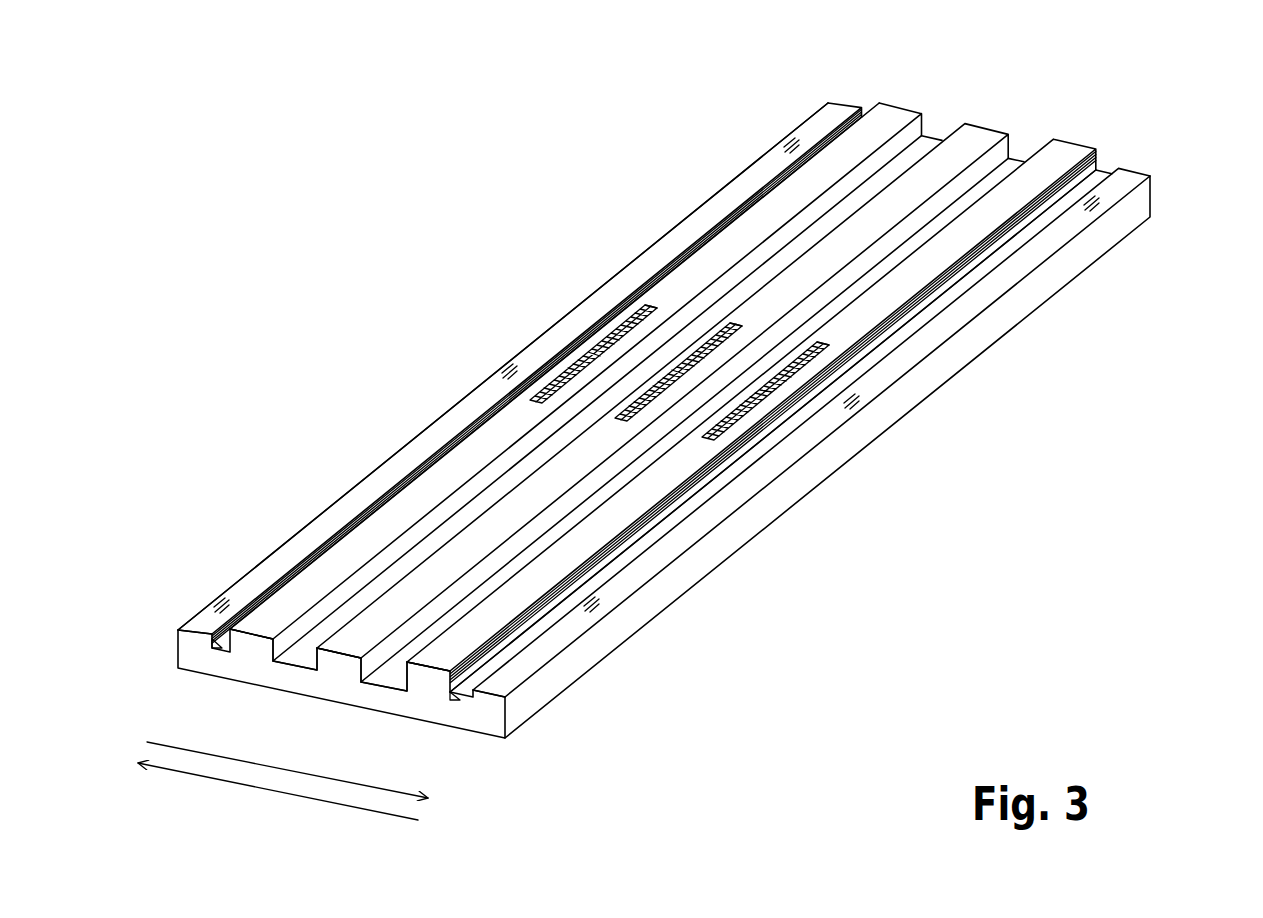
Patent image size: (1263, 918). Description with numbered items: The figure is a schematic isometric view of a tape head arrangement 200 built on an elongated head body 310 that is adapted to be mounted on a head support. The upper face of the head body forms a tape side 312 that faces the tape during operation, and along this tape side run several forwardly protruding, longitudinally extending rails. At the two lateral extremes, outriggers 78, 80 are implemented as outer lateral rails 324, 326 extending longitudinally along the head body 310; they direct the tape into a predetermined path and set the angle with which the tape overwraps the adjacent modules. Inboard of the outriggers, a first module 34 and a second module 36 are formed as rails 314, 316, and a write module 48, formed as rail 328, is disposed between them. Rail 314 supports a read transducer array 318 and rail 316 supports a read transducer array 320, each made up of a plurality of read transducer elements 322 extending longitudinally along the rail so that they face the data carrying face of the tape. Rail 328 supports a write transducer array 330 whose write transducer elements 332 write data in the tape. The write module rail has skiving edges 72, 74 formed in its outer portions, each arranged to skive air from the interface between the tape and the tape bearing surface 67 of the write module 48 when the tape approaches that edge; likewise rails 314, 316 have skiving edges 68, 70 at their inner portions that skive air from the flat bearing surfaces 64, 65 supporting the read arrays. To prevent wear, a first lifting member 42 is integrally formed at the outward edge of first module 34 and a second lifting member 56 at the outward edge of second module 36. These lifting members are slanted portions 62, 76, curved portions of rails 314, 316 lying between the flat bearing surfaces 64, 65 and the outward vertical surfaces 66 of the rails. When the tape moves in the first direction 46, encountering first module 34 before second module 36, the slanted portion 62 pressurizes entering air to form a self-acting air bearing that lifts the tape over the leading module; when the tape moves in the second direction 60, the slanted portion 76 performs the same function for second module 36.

The tape head arrangement 200 is at (331, 286).
The head body 310 is at (1106, 252).
The outrigger 78 is at (843, 92).
The outer lateral rail 324 is at (830, 102).
The first lifting member 42 is at (496, 402).
The tape side 312 is at (617, 249).
The slanted portion 62 is at (231, 639).
The outward vertical surface 66 is at (222, 642).
The first module 34 is at (914, 88).
The rail 314 is at (921, 110).
The flat bearing surface 64 is at (333, 567).
The skiving edge 68 is at (287, 650).
The skiving edge 72 is at (316, 661).
The write module 48 is at (998, 114).
The rail 328 is at (1009, 128).
The tape bearing surface 67 is at (362, 620).
The skiving edge 70 is at (405, 681).
The skiving edge 74 is at (362, 669).
The second module 36 is at (1081, 127).
The rail 316 is at (1095, 148).
The flat bearing surface 65 is at (473, 620).
The slanted portion 76 is at (449, 686).
The second lifting member 56 is at (731, 456).
The outrigger 80 is at (1133, 167).
The outer lateral rail 326 is at (1151, 177).
The read transducer array 318 is at (586, 342).
The read transducer element 322 is at (653, 307).
The write transducer array 330 is at (654, 401).
The write transducer element 332 is at (738, 323).
The read transducer array 320 is at (768, 401).
The first direction 46 is at (337, 780).
The second direction 60 is at (242, 784).